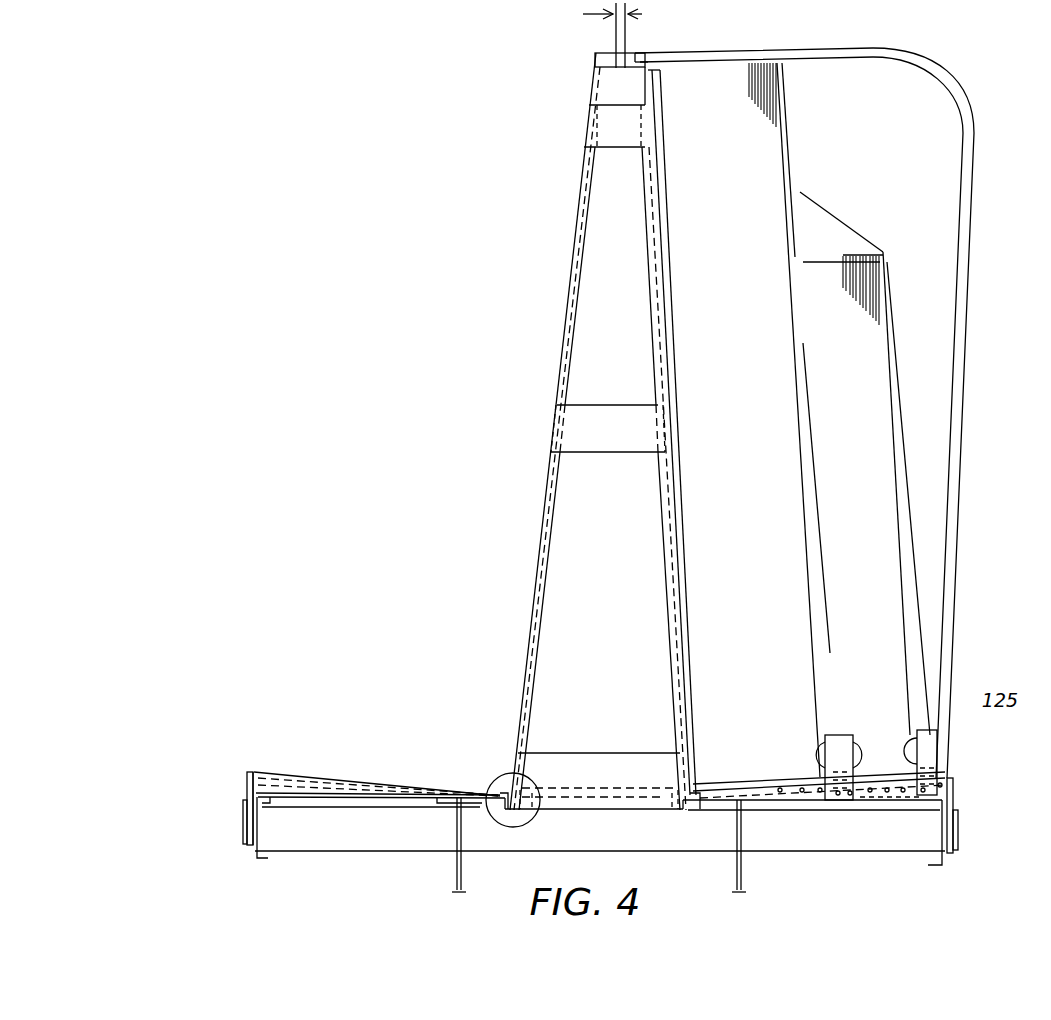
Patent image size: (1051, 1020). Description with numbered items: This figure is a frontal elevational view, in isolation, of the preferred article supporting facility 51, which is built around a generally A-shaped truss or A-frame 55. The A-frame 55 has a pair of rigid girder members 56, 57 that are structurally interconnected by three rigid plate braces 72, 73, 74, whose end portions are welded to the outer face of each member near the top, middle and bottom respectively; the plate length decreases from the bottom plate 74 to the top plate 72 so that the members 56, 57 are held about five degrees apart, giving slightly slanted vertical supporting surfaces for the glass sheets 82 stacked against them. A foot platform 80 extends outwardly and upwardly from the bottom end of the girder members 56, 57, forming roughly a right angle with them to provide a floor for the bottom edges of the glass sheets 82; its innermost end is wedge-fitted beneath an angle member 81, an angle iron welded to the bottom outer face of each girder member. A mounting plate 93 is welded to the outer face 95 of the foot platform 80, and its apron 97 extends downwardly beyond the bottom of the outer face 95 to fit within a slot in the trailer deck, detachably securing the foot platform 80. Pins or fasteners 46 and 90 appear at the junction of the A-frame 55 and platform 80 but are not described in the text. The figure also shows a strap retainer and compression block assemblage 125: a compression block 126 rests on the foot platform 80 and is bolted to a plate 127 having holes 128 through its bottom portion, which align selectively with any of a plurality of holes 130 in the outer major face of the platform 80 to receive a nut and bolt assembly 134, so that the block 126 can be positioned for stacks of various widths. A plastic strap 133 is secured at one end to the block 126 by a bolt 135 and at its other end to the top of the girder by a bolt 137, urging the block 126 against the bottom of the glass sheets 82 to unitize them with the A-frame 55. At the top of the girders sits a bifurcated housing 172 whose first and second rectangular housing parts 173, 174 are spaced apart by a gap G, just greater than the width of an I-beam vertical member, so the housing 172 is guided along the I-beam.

The pin 46 is at (528, 790).
The article supporting facility 51 is at (555, 406).
The A-frame 55 is at (540, 578).
The girder member 56 is at (556, 495).
The girder member 57 is at (660, 517).
The top plate brace 72 is at (605, 130).
The middle plate brace 73 is at (592, 418).
The bottom plate brace 74 is at (600, 762).
The foot platform 80 is at (277, 788).
The angle member 81 is at (507, 790).
The glass sheets 82 is at (780, 96).
The fastener 90 is at (532, 808).
The mounting plate 93 is at (243, 778).
The outer face 95 is at (246, 775).
The apron 97 is at (243, 818).
The strap retainer and compression block assemblage 125 is at (600, 844).
The compression block 126 is at (824, 760).
The plate 127 is at (918, 740).
The holes 128 is at (850, 797).
The holes 130 is at (801, 788).
The plastic strap 133 is at (962, 345).
The nut and bolt assembly 134 is at (924, 797).
The bolt 135 is at (948, 782).
The bolt 137 is at (646, 63).
The bifurcated housing 172 is at (590, 61).
The first housing part 173 is at (600, 53).
The second housing part 174 is at (627, 52).